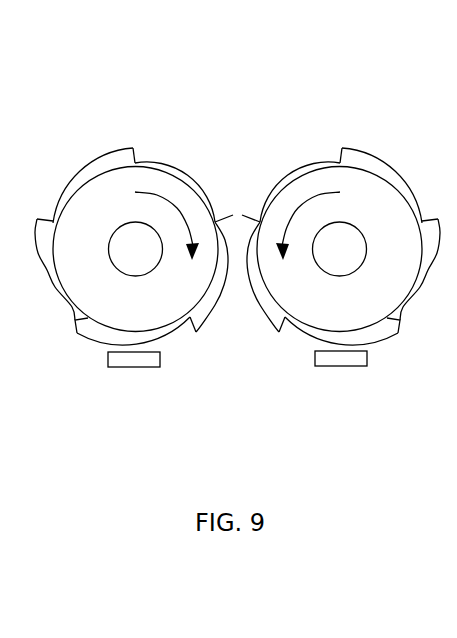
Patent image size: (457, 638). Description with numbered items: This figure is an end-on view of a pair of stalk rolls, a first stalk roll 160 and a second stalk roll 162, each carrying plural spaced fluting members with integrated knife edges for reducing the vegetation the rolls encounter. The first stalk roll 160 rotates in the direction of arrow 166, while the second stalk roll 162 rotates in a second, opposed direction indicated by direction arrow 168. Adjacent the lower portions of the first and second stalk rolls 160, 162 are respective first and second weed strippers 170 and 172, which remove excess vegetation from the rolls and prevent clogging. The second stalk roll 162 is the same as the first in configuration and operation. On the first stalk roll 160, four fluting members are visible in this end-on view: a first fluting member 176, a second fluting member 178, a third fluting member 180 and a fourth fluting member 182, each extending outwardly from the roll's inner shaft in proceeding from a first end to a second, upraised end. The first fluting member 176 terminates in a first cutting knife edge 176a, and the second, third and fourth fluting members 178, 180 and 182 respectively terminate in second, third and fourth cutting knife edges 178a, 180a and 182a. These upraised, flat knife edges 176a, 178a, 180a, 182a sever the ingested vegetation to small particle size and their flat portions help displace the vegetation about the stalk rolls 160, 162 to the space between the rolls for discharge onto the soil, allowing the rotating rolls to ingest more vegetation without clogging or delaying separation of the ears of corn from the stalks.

The first stalk roll 160 is at (111, 112).
The second stalk roll 162 is at (349, 110).
The direction arrow 166 is at (190, 178).
The direction arrow 168 is at (310, 203).
The first weed stripper 170 is at (110, 363).
The second weed stripper 172 is at (362, 362).
The first fluting member 176 is at (70, 170).
The first cutting knife edge 176a is at (148, 146).
The second fluting member 178 is at (173, 200).
The second cutting knife edge 178a is at (237, 207).
The third fluting member 180 is at (219, 289).
The third cutting knife edge 180a is at (189, 335).
The fourth fluting member 182 is at (103, 342).
The fourth cutting knife edge 182a is at (72, 320).